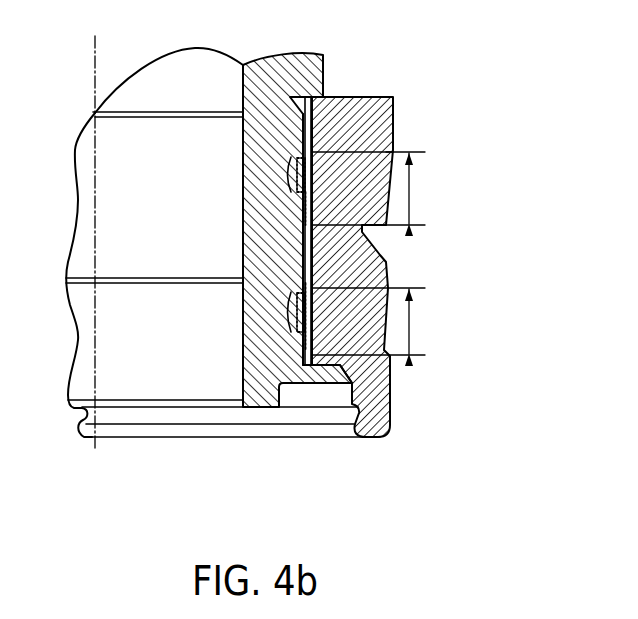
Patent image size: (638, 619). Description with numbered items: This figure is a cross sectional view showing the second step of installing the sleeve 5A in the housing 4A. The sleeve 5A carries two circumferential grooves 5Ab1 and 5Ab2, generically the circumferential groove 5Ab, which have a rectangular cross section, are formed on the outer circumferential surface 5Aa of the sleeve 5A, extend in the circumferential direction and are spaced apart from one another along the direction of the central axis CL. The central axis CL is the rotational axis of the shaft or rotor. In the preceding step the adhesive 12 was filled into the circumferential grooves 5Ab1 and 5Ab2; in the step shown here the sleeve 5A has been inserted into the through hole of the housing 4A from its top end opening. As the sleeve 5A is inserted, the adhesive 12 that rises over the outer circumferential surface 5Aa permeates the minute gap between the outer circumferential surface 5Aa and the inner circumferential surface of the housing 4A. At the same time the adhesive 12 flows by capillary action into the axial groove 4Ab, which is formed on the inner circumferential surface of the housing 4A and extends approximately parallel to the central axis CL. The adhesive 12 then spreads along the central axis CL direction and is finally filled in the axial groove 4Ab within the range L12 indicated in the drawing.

The central axis CL is at (97, 230).
The sleeve 5A is at (270, 72).
The housing 4A is at (357, 97).
The axial groove 4Ab is at (318, 96).
The adhesive 12 is at (311, 178).
The range of adhesive filling L12 is at (416, 253).
The outer circumferential surface 5Aa is at (300, 250).
The circumferential groove 5Ab is at (224, 257).
The first circumferential groove 5Ab1 is at (298, 177).
The second circumferential groove 5Ab2 is at (297, 305).